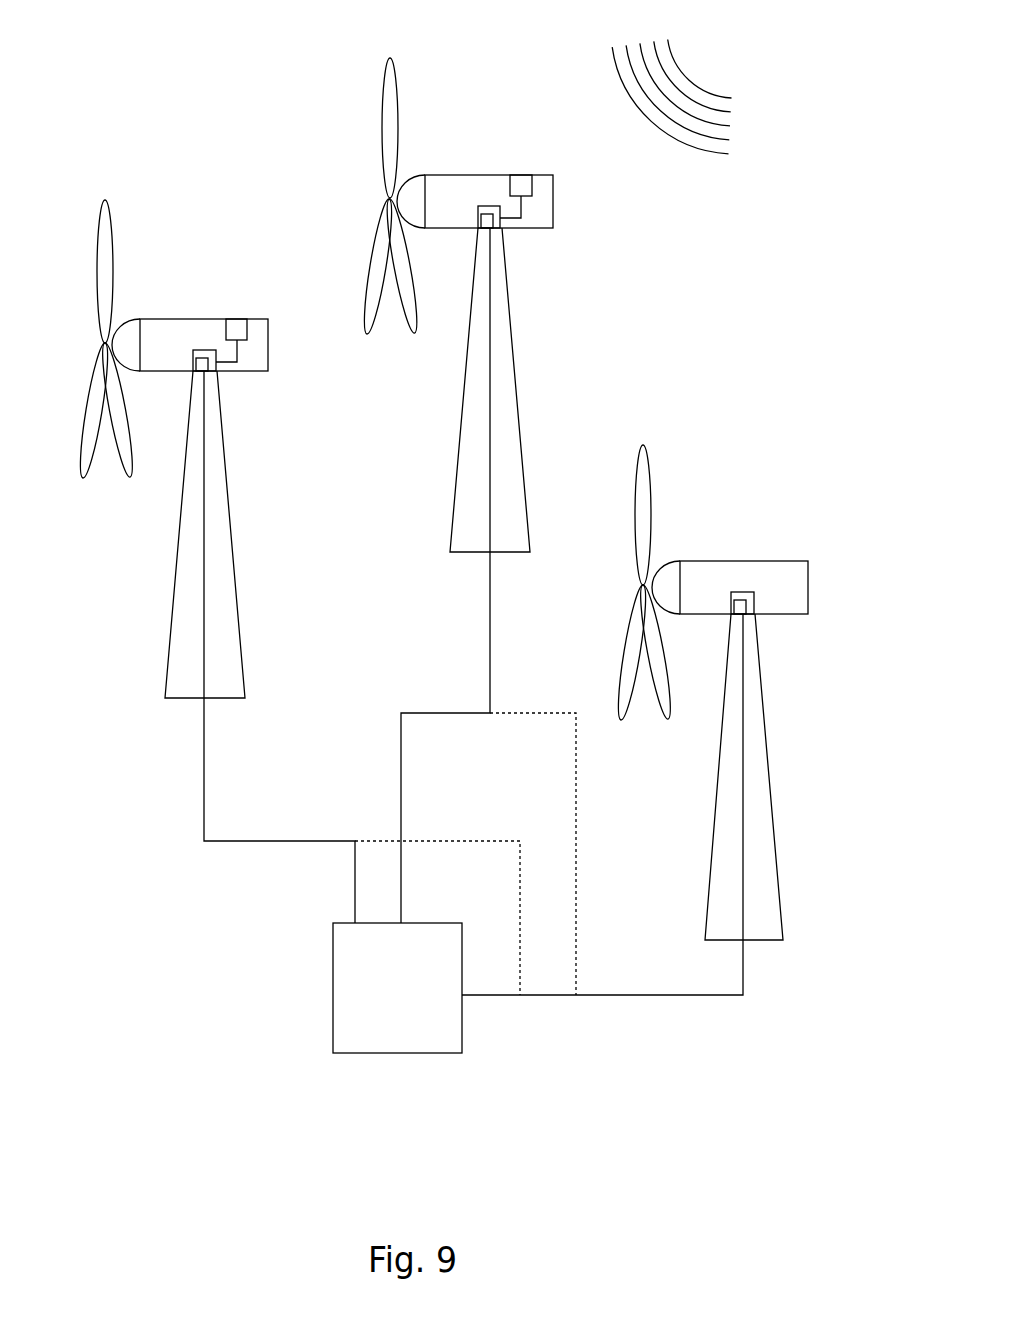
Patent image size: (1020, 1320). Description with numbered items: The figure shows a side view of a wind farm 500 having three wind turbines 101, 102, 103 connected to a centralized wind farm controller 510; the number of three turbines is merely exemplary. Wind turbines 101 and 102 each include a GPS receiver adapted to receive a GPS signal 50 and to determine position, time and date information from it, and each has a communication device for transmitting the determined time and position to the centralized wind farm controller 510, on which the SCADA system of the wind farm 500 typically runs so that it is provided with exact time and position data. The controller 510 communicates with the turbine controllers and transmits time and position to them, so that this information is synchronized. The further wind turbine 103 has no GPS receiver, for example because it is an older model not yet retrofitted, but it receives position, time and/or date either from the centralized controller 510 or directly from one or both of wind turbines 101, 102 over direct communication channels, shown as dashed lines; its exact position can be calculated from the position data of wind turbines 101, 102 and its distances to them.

The wind farm 500 is at (166, 53).
The wind turbine 101 is at (229, 286).
The wind turbine 102 is at (515, 146).
The further wind turbine 103 is at (782, 528).
The centralized wind farm controller 510 is at (421, 1005).
The GPS signal 50 is at (706, 70).